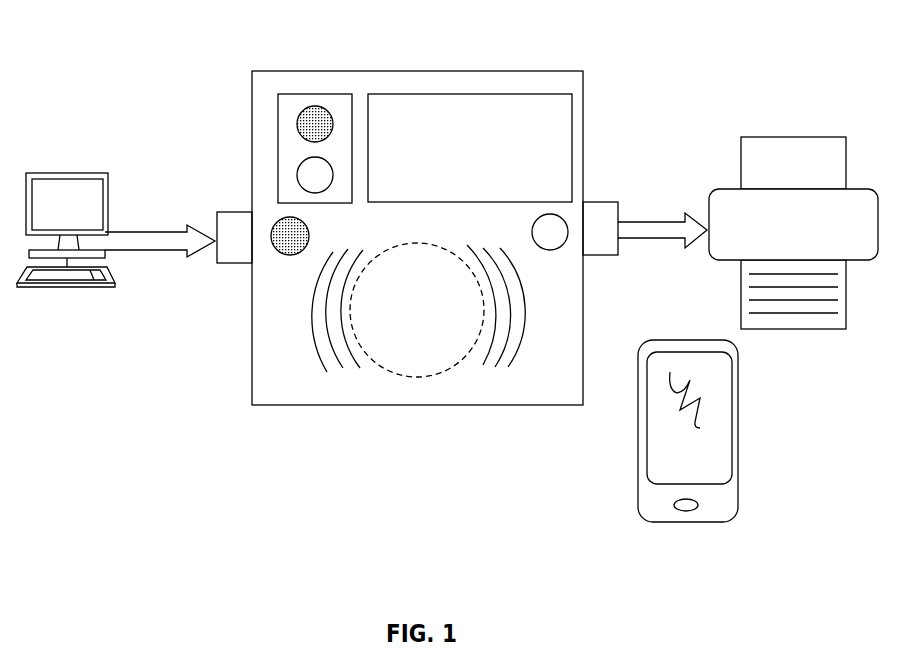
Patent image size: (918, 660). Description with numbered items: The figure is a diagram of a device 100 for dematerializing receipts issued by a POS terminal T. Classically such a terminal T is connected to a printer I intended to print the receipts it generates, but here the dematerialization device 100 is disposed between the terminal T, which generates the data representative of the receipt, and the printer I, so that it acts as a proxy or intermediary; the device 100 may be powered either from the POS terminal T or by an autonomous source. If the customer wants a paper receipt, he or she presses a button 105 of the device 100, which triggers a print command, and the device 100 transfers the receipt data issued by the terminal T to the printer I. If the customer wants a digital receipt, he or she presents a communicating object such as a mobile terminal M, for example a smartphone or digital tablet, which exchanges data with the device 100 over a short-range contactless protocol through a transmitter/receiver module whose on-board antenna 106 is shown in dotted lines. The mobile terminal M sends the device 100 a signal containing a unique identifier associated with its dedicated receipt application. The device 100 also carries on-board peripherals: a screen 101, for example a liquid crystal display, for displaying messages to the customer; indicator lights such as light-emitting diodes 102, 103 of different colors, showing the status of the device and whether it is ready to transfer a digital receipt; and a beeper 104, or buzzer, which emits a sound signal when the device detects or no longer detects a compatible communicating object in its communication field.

The dematerialization device 100 is at (331, 71).
The screen 101 is at (475, 94).
The light-emitting diode 102 is at (300, 121).
The light-emitting diode 103 is at (297, 181).
The beeper 104 is at (287, 253).
The button 105 is at (557, 224).
The on-board antenna 106 is at (383, 361).
The POS terminal T is at (116, 230).
The printer I is at (748, 233).
The mobile terminal M is at (731, 500).